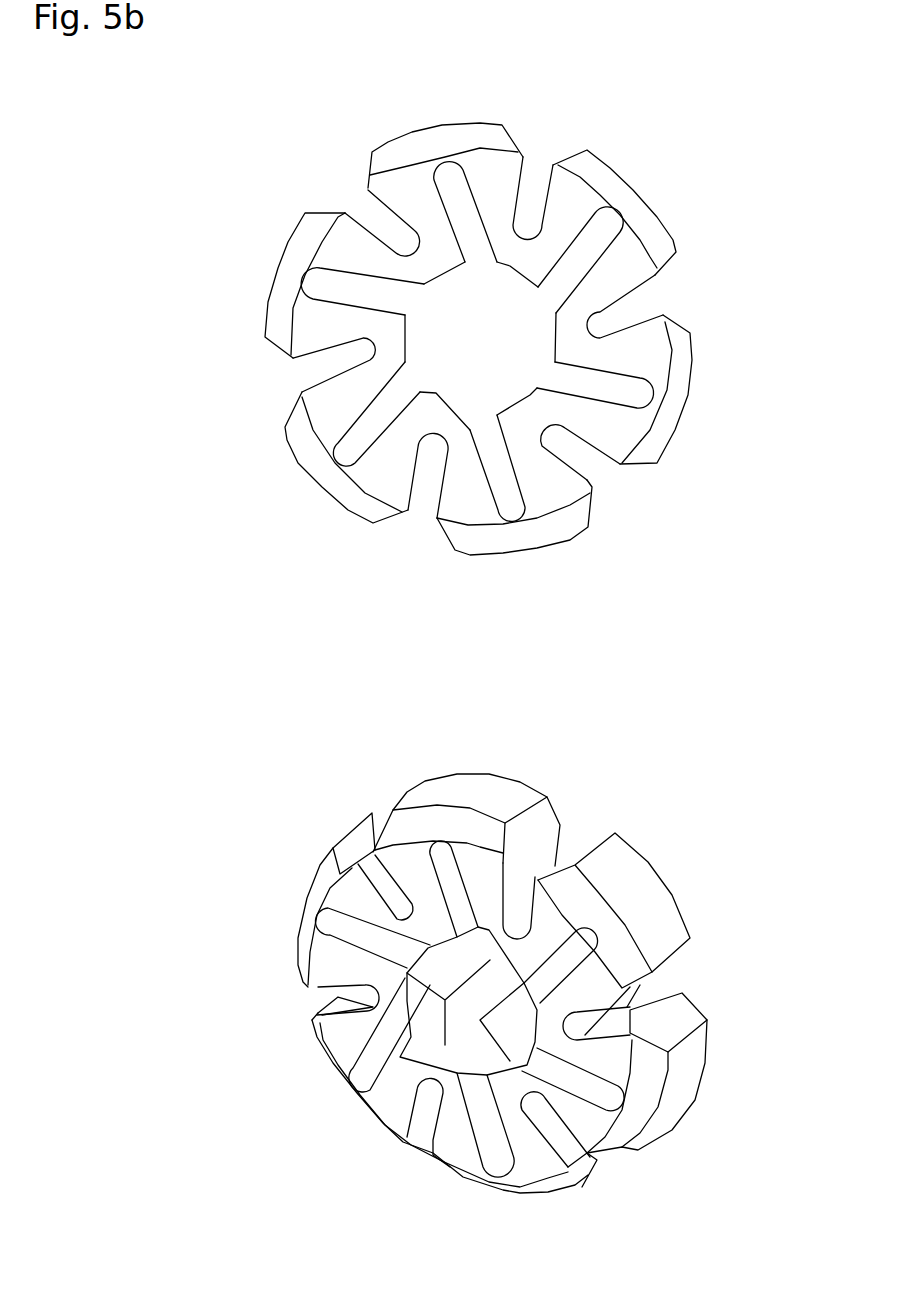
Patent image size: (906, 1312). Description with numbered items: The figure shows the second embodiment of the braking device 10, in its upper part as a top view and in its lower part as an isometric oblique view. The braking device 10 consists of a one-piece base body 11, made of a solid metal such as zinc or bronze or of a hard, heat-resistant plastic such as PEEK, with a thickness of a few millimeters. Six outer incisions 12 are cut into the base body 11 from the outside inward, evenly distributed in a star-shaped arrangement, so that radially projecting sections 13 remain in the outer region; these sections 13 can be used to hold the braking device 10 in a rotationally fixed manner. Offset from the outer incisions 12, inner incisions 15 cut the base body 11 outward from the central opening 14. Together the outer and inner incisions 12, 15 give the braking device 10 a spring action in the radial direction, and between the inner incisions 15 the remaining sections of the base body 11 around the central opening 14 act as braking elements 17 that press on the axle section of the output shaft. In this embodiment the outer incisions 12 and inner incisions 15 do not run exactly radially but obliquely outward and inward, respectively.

The braking device 10 is at (656, 124).
The base body 11 is at (412, 183).
The outer incisions 12 is at (427, 488).
The radially projecting sections 13 is at (641, 228).
The central opening 14 is at (494, 345).
The inner incisions 15 is at (578, 258).
The braking elements 17 is at (537, 1047).